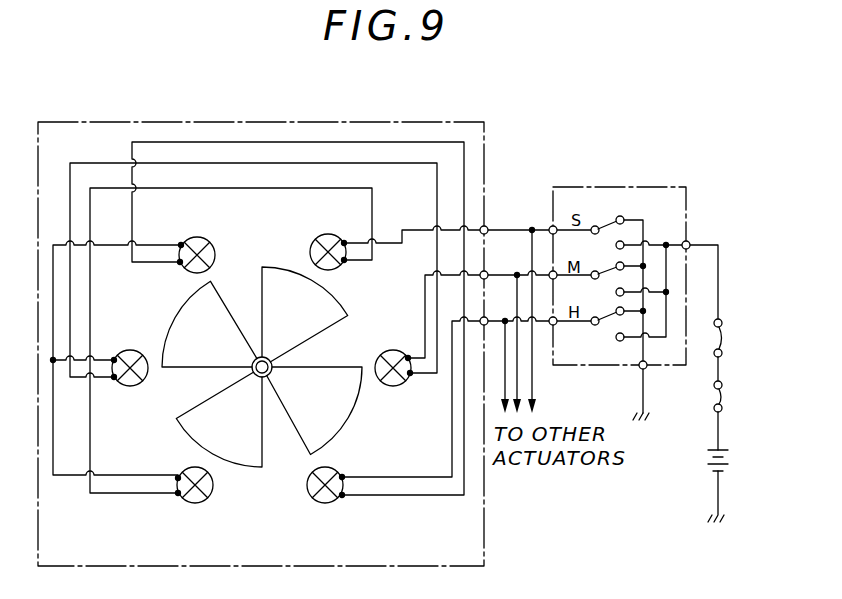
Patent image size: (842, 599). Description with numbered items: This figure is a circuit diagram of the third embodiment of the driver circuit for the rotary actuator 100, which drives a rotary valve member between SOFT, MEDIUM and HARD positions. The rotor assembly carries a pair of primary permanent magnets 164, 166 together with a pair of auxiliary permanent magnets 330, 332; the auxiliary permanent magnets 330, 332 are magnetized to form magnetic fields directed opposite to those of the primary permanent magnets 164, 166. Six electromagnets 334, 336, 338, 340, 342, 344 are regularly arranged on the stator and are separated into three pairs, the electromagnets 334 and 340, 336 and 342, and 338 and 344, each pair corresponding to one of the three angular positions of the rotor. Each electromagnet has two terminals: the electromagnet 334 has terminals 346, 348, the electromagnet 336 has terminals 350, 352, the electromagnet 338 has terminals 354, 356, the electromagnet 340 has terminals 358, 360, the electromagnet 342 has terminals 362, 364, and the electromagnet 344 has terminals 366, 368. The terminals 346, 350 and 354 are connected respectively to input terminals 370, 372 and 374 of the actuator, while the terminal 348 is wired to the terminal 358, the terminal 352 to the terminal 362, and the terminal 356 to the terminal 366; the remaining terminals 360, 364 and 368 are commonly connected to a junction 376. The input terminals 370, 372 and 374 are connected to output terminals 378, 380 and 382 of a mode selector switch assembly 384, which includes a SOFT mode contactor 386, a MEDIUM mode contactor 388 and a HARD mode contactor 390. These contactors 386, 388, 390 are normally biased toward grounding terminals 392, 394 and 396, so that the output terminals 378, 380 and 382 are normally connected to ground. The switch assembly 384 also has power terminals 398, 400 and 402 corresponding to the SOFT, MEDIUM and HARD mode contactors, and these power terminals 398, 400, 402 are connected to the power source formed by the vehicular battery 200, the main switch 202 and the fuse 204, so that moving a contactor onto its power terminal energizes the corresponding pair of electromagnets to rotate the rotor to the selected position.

The actuator 100 is at (491, 137).
The primary permanent magnet 164 is at (264, 270).
The primary permanent magnet 166 is at (247, 466).
The vehicular battery 200 is at (728, 464).
The main switch 202 is at (722, 396).
The fuse 204 is at (722, 337).
The auxiliary permanent magnet 330 is at (344, 420).
The auxiliary permanent magnet 332 is at (220, 305).
The electromagnet 334 is at (322, 238).
The electromagnet 336 is at (390, 352).
The electromagnet 338 is at (318, 500).
The electromagnet 340 is at (205, 500).
The electromagnet 342 is at (144, 372).
The electromagnet 344 is at (196, 238).
The terminal 346 is at (346, 243).
The terminal 348 is at (346, 261).
The terminal 350 is at (410, 356).
The terminal 352 is at (410, 375).
The terminal 354 is at (343, 477).
The terminal 356 is at (343, 495).
The terminal 358 is at (178, 494).
The terminal 360 is at (178, 480).
The terminal 362 is at (112, 378).
The terminal 364 is at (114, 360).
The terminal 366 is at (178, 263).
The terminal 368 is at (180, 245).
The input terminal 370 is at (486, 226).
The input terminal 372 is at (486, 272).
The input terminal 374 is at (452, 316).
The junction 376 is at (53, 362).
The output terminal 378 is at (551, 226).
The output terminal 380 is at (554, 271).
The output terminal 382 is at (553, 325).
The mode selector switch assembly 384 is at (690, 178).
The SOFT mode contactor 386 is at (616, 225).
The MEDIUM mode contactor 388 is at (623, 281).
The HARD mode contactor 390 is at (608, 323).
The grounding terminal 392 is at (622, 217).
The grounding terminal 394 is at (645, 262).
The grounding terminal 396 is at (645, 340).
The power terminal 398 is at (623, 242).
The power terminal 400 is at (623, 304).
The power terminal 402 is at (622, 341).